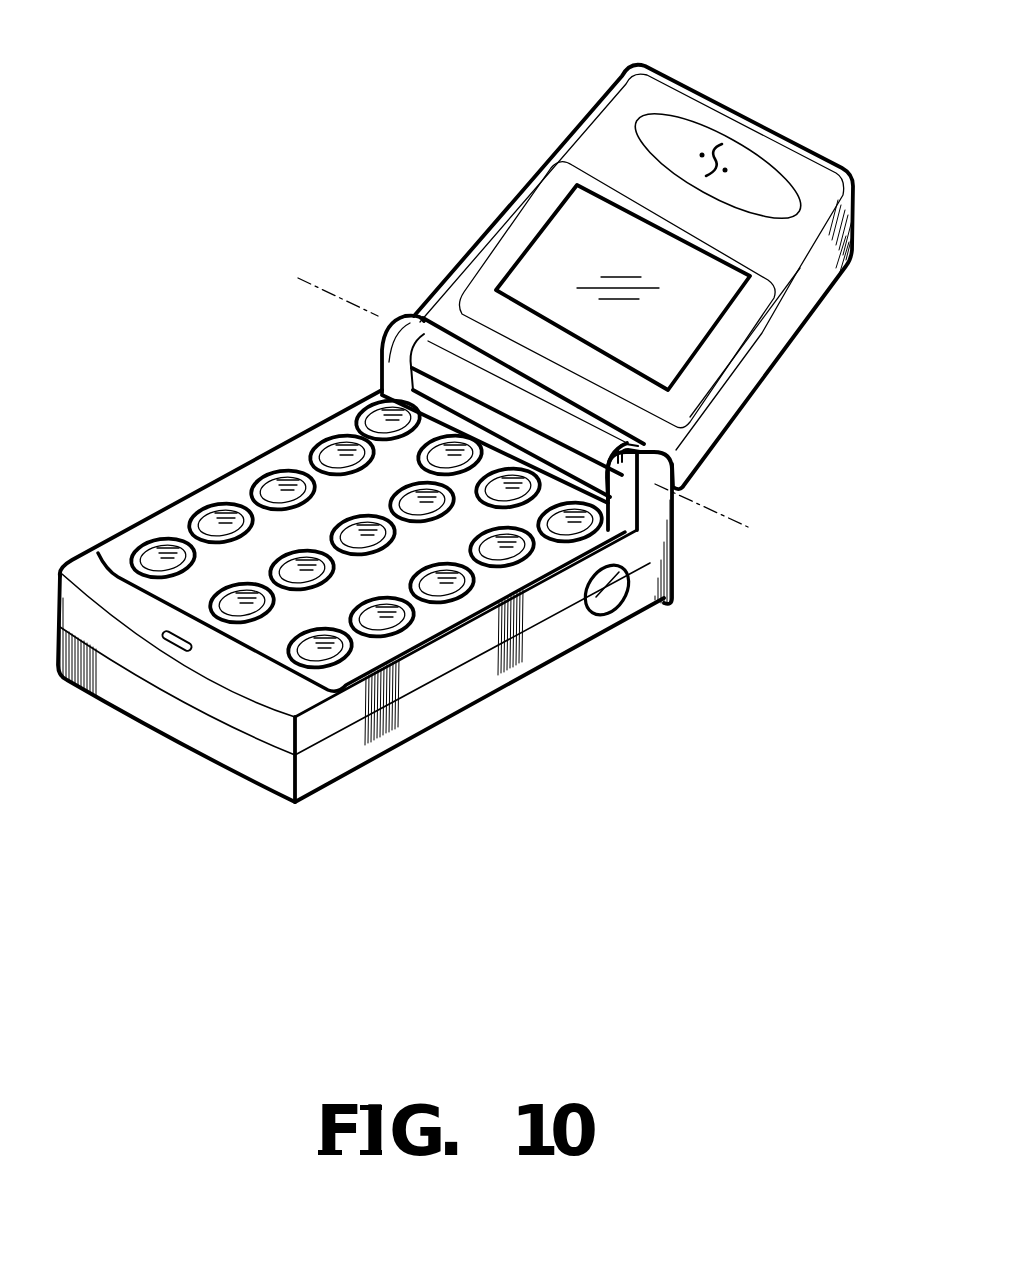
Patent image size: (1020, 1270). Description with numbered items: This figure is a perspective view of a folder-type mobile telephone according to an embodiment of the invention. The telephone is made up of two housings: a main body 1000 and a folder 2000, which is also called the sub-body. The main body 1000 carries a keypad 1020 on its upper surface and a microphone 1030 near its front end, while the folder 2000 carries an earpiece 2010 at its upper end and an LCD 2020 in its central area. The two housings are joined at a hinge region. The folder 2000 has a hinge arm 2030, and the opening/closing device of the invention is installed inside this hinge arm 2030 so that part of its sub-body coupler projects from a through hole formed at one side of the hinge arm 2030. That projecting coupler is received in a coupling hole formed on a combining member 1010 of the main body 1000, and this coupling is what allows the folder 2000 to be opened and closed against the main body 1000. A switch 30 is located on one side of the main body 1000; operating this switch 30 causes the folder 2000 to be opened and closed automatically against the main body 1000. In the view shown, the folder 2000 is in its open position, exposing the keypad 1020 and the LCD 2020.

The switch 30 is at (626, 588).
The main body 1000 is at (212, 460).
The combining member 1010 is at (406, 318).
The keypad 1020 is at (473, 620).
The microphone 1030 is at (172, 641).
The folder 2000 is at (582, 89).
The earpiece 2010 is at (749, 160).
The LCD 2020 is at (708, 306).
The hinge arm 2030 is at (583, 410).